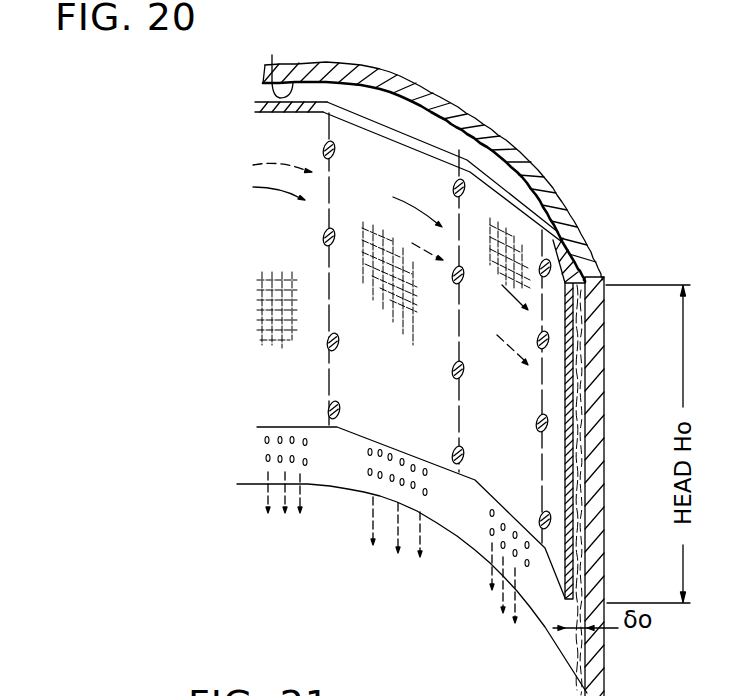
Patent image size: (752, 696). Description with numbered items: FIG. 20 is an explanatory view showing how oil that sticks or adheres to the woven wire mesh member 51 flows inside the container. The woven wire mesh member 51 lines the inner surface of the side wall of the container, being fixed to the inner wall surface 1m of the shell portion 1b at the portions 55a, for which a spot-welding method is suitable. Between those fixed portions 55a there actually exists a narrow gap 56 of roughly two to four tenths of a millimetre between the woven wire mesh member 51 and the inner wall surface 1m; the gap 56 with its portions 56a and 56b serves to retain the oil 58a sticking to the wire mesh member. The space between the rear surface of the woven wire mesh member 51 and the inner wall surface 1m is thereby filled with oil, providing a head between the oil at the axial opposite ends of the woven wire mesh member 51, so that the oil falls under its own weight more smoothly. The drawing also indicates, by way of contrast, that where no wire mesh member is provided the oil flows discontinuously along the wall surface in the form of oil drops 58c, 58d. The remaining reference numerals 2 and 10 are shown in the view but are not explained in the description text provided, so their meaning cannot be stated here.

The inner wall surface 1m is at (270, 63).
The shell portion 1b is at (578, 227).
The mold body 2 is at (430, 170).
The mold assembly 10 is at (530, 148).
The woven wire mesh member 51 is at (462, 126).
The fixed portions 55a is at (322, 148).
The narrow gap 56 is at (358, 100).
The gap portion 56a is at (429, 141).
The gap portion 56b is at (595, 260).
The oil 58a is at (579, 360).
The oil drops 58c is at (368, 475).
The oil drops 58d is at (490, 532).